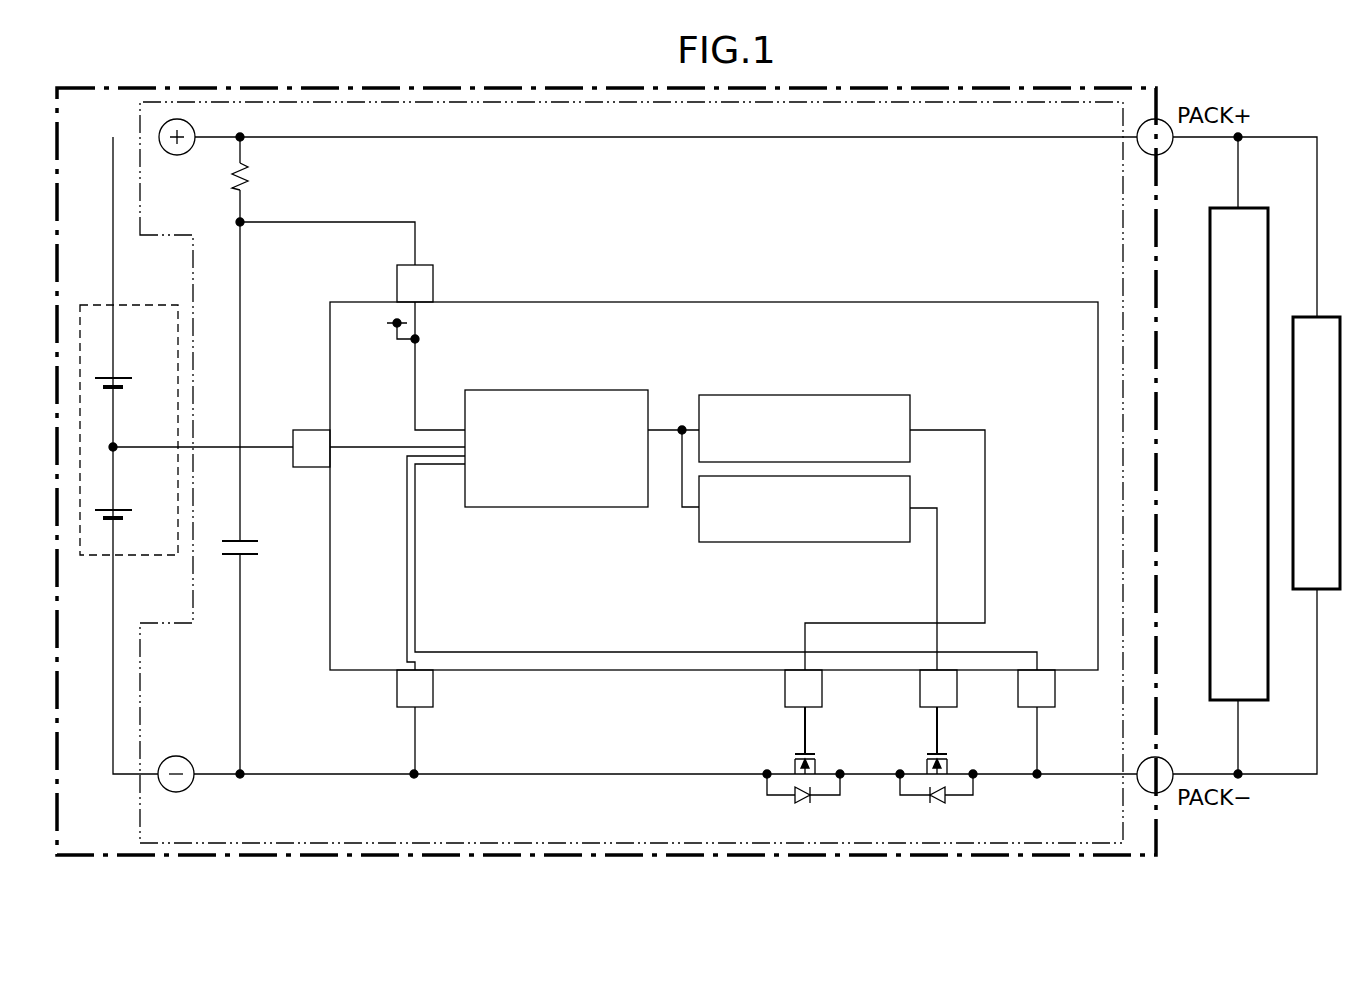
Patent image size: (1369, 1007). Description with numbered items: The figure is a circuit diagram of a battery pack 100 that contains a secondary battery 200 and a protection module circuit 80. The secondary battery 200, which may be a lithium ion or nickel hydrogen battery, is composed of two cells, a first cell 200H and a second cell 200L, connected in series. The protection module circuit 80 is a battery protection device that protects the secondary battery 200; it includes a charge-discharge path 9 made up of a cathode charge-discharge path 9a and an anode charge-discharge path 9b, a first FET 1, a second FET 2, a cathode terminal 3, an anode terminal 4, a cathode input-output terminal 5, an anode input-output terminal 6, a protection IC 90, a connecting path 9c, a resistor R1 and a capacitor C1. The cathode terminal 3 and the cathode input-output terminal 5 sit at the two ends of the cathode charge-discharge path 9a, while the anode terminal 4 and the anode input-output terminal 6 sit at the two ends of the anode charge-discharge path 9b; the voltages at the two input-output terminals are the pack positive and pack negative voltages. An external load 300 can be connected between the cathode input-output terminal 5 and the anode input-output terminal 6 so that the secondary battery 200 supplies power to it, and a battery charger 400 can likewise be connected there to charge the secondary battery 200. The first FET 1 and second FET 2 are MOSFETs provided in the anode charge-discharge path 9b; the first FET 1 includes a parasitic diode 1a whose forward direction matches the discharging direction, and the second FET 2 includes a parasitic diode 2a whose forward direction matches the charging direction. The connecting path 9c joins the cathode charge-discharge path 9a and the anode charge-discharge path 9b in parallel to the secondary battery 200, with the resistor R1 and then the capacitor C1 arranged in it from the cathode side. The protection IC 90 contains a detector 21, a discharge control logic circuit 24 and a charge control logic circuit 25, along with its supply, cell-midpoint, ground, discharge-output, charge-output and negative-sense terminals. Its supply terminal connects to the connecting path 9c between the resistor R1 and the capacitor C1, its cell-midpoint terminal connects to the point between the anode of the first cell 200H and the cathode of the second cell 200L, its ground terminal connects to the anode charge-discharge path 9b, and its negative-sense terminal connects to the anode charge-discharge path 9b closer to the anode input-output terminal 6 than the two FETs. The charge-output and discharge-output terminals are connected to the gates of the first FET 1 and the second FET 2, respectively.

The battery pack 100 is at (962, 88).
The protection module circuit 80 is at (140, 820).
The charge-discharge path 9 is at (623, 495).
The cathode charge-discharge path 9a is at (958, 137).
The anode charge-discharge path 9b is at (515, 775).
The connecting path 9c is at (240, 296).
The cathode terminal 3 is at (190, 150).
The anode terminal 4 is at (189, 786).
The cathode input-output terminal 5 is at (1168, 150).
The anode input-output terminal 6 is at (1168, 762).
The resistor R1 is at (245, 176).
The capacitor C1 is at (232, 540).
The secondary battery 200 is at (136, 403).
The first cell 200H is at (120, 376).
The second cell 200L is at (120, 509).
The protection IC 90 is at (965, 303).
The detector 21 is at (586, 390).
The discharge control logic circuit 24 is at (910, 415).
The charge control logic circuit 25 is at (910, 492).
The second FET 2 is at (812, 752).
The parasitic diode 2a is at (796, 798).
The first FET 1 is at (945, 752).
The parasitic diode 1a is at (946, 798).
The external load 300 is at (1252, 208).
The battery charger 400 is at (1324, 317).